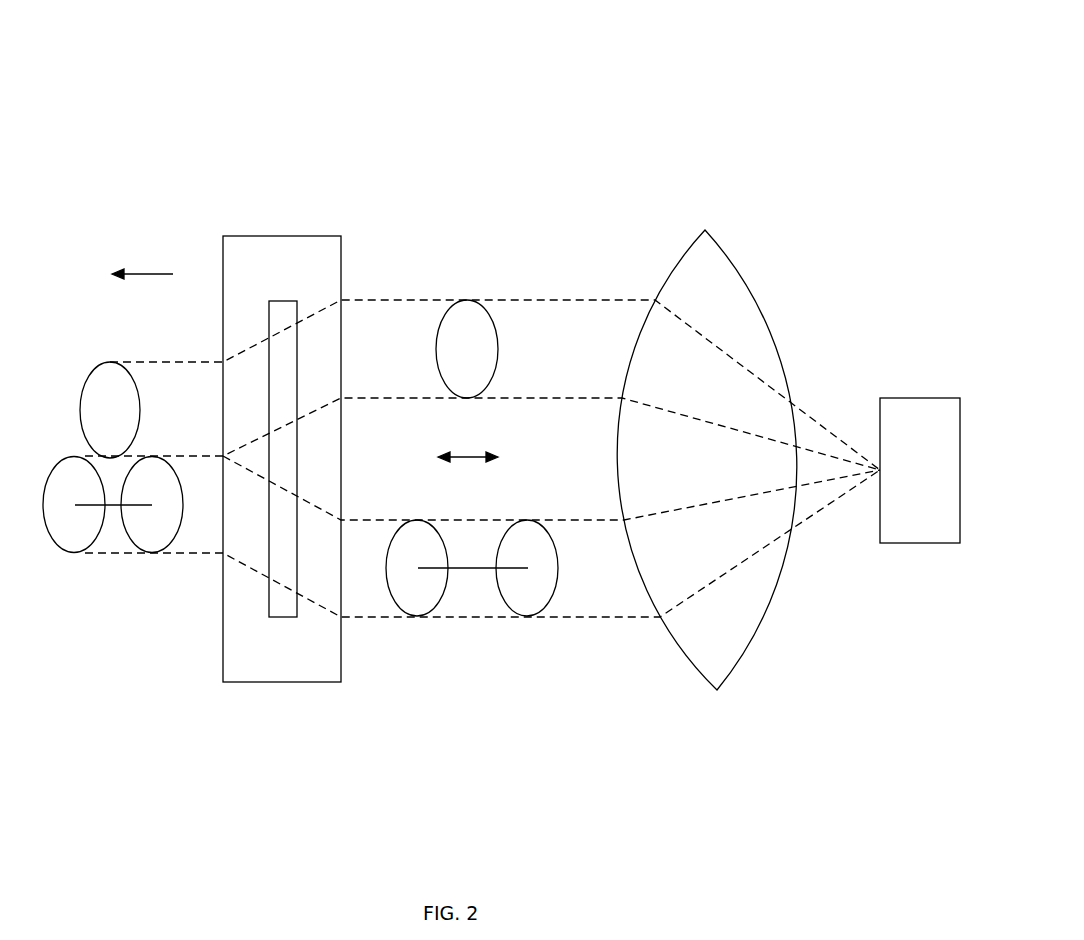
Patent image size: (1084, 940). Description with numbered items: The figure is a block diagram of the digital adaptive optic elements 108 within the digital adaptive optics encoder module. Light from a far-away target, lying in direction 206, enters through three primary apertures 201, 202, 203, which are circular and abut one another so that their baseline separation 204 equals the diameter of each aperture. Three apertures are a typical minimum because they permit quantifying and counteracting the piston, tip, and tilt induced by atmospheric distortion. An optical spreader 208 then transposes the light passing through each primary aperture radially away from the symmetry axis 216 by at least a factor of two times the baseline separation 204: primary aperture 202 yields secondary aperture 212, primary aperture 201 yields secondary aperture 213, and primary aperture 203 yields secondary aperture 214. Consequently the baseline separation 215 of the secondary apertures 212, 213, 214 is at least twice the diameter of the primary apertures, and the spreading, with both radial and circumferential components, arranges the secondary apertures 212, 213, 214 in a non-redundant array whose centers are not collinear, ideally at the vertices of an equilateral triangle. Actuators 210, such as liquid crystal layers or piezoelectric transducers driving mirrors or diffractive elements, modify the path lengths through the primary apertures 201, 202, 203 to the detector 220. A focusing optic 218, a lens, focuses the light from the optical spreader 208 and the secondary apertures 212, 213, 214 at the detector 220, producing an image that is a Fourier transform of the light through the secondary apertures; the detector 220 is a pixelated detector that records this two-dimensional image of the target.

The digital adaptive optic elements 108 is at (493, 105).
The primary aperture 201 is at (75, 553).
The primary aperture 202 is at (110, 362).
The primary aperture 203 is at (152, 553).
The baseline separation of the primary apertures 204 is at (115, 505).
The direction 206 is at (158, 280).
The optical spreader 208 is at (283, 235).
The actuators 210 is at (283, 617).
The secondary aperture 212 is at (468, 300).
The secondary aperture 213 is at (418, 617).
The secondary aperture 214 is at (528, 617).
The baseline separation of the secondary apertures 215 is at (480, 568).
The symmetry axis 216 is at (483, 461).
The focusing optic 218 is at (688, 245).
The detector 220 is at (920, 398).